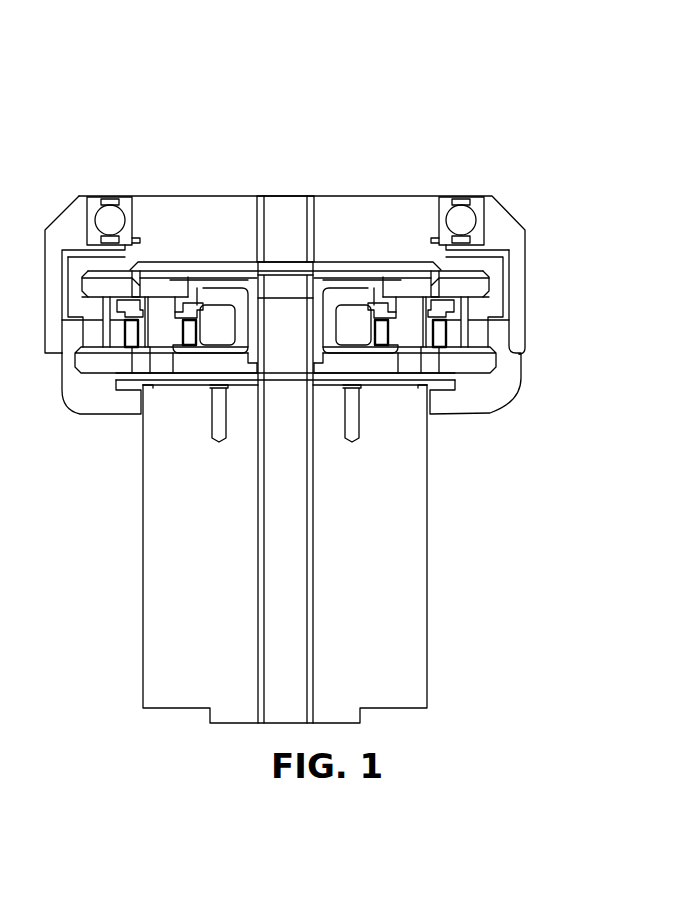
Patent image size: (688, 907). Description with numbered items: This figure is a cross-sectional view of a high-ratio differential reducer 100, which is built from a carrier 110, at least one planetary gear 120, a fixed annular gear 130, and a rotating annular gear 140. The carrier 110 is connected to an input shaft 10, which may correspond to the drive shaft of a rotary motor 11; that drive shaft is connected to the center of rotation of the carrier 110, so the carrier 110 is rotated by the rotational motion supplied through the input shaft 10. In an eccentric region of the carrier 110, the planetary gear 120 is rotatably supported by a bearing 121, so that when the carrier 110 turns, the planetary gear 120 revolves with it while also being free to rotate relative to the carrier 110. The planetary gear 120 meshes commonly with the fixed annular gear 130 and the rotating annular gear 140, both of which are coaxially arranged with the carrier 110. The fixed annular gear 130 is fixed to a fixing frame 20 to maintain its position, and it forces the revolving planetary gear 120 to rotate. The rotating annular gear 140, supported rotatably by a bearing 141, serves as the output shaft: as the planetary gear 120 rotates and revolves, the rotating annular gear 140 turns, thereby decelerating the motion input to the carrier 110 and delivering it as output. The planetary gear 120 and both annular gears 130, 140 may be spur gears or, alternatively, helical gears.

The high-ratio differential reducer 100 is at (90, 89).
The input shaft 10 is at (288, 515).
The rotary motor 11 is at (403, 625).
The fixing frame 20 is at (503, 224).
The carrier 110 is at (358, 283).
The planetary gear 120 is at (473, 362).
The bearing 121 is at (437, 335).
The fixed annular gear 130 is at (503, 380).
The rotating annular gear 140 is at (492, 298).
The bearing 141 is at (459, 212).